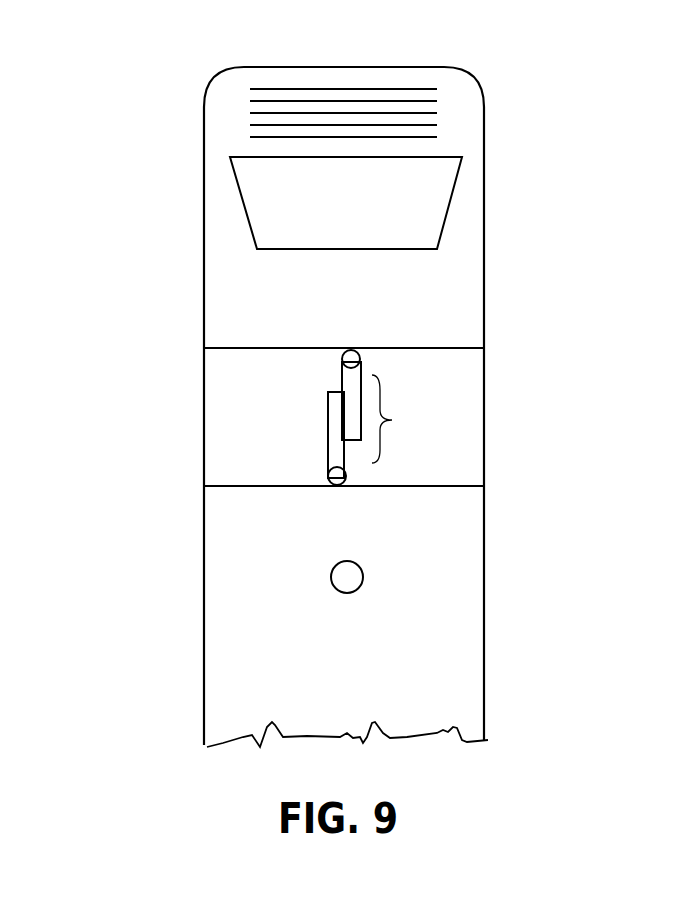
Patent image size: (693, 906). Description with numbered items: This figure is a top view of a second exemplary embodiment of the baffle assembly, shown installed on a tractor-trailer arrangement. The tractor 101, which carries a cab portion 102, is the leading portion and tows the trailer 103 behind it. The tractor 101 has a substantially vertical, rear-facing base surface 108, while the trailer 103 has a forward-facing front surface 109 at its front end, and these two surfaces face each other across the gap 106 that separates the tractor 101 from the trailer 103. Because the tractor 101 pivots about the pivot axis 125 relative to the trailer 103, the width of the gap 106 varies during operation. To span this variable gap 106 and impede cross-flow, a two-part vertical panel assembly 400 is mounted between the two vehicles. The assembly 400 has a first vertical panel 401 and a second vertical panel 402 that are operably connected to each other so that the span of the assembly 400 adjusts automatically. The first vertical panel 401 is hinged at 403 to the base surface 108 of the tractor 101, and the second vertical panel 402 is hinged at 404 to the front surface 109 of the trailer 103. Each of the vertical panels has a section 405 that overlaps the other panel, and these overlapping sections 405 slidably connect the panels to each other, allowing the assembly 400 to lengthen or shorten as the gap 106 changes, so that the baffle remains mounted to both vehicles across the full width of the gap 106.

The tractor 101 is at (423, 66).
The cab portion 102 is at (355, 296).
The trailer 103 is at (388, 698).
The gap 106 is at (263, 428).
The base surface 108 is at (470, 348).
The front surface 109 is at (470, 484).
The pivot axis 125 is at (363, 577).
The two-part vertical panel assembly 400 is at (572, 397).
The first vertical panel 401 is at (342, 381).
The second vertical panel 402 is at (328, 451).
The hinge 403 is at (350, 348).
The hinge 404 is at (337, 485).
The overlapping section 405 is at (397, 420).